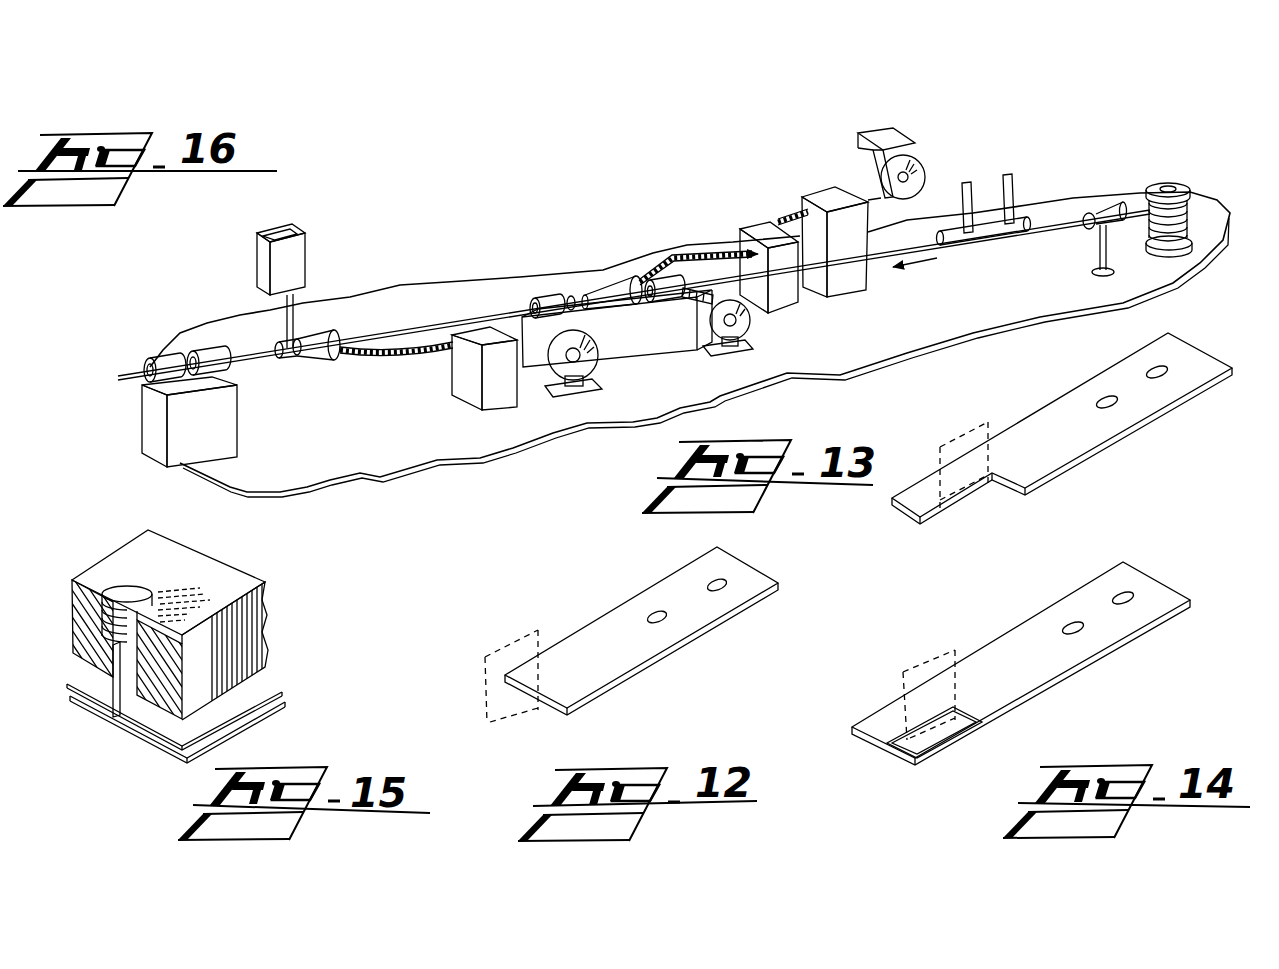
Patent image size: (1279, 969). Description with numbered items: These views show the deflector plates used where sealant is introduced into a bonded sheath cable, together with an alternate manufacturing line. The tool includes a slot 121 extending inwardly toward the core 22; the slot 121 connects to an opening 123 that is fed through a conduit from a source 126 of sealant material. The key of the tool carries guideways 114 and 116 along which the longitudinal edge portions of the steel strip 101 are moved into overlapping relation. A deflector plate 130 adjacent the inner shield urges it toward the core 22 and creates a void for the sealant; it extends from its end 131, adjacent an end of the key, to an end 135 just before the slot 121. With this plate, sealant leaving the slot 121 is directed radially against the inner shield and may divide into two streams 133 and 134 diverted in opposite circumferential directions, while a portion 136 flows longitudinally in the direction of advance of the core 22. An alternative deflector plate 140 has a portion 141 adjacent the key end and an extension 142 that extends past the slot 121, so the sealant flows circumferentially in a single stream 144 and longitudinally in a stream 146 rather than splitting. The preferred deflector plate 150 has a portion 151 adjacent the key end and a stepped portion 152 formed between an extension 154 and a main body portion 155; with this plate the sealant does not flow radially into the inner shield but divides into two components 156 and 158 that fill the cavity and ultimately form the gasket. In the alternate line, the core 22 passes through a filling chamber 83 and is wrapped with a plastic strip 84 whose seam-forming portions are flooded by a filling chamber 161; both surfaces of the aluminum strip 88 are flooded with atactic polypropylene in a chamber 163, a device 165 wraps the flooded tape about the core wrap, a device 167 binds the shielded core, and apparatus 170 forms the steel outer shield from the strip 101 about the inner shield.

In FIG. 16, the core 22 is at (1053, 220).
In FIG. 16, the filling chamber 83 is at (990, 240).
In FIG. 16, the strip of plastic material 84 is at (713, 300).
In FIG. 16, the strip of aluminum 88 is at (787, 213).
In FIG. 16, the corrugated strip of steel 101 is at (377, 360).
In FIG. 15, the guideway 114 is at (72, 692).
In FIG. 15, the guideway 116 is at (270, 663).
In FIG. 13, the slot 121 is at (963, 440).
In FIG. 12, the slot 121 is at (527, 632).
In FIG. 14, the slot 121 is at (930, 650).
In FIG. 15, the slot 121 is at (122, 680).
In FIG. 15, the opening 123 is at (143, 592).
In FIG. 16, the source 126 is at (293, 253).
In FIG. 12, the deflector plate 130 is at (652, 625).
In FIG. 12, the end 131 is at (727, 565).
In FIG. 12, the stream 133 is at (485, 712).
In FIG. 12, the stream 134 is at (520, 718).
In FIG. 12, the end 135 is at (557, 694).
In FIG. 12, the portion of the sealant 136 is at (500, 715).
In FIG. 13, the deflector plate 140 is at (1074, 422).
In FIG. 13, the portion 141 is at (1185, 352).
In FIG. 13, the extension 142 is at (908, 502).
In FIG. 13, the stream 144 is at (973, 500).
In FIG. 13, the stream 146 is at (950, 520).
In FIG. 14, the deflector plate 150 is at (1029, 653).
In FIG. 15, the deflector plate 150 is at (230, 737).
In FIG. 14, the portion 151 is at (1140, 582).
In FIG. 14, the stepped portion 152 is at (938, 753).
In FIG. 15, the stepped portion 152 is at (200, 753).
In FIG. 14, the extension 154 is at (873, 725).
In FIG. 15, the extension 154 is at (85, 707).
In FIG. 14, the main body portion 155 is at (1040, 675).
In FIG. 14, the component 156 is at (955, 743).
In FIG. 14, the component 158 is at (907, 753).
In FIG. 16, the filling chamber 161 is at (705, 290).
In FIG. 16, the chamber 163 is at (758, 230).
In FIG. 16, the device 165 is at (608, 287).
In FIG. 16, the device 167 is at (545, 300).
In FIG. 16, the apparatus 170 is at (320, 333).